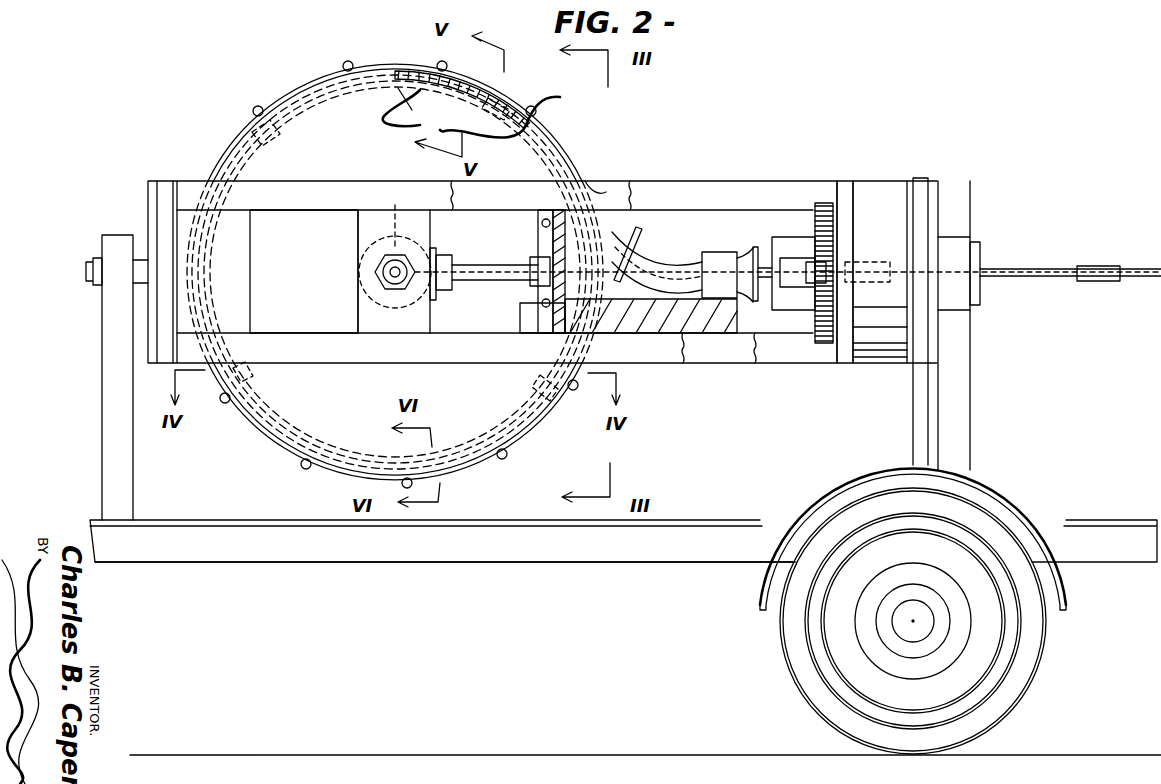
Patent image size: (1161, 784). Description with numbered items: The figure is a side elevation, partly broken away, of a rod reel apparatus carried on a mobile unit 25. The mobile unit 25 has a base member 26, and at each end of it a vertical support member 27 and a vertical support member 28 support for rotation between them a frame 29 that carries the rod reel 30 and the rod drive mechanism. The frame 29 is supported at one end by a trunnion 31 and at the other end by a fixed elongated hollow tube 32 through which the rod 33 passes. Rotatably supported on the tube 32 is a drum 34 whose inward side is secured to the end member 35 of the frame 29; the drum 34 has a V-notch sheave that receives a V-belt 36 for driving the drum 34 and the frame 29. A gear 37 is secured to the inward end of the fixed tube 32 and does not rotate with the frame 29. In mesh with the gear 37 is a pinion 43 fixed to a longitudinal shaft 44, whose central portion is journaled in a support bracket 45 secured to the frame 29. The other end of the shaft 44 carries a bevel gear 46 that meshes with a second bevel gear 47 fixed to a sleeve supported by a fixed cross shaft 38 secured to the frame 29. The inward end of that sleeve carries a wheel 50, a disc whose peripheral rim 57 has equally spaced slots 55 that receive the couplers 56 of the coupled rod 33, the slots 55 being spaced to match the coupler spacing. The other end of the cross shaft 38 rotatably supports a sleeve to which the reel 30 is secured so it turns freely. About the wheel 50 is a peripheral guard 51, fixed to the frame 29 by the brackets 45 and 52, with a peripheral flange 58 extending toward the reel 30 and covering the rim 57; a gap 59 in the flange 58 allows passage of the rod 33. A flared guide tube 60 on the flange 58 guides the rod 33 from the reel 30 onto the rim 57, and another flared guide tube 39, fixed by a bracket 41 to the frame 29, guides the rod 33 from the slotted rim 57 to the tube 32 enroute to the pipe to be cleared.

The mobile unit 25 is at (417, 583).
The base member 26 is at (226, 548).
The vertical support member 27 is at (118, 476).
The vertical support member 28 is at (958, 373).
The frame 29 is at (694, 184).
The rod reel 30 is at (293, 85).
The trunnion 31 is at (86, 270).
The tube 32 is at (977, 246).
The rod 33 is at (1030, 278).
The drum 34 is at (880, 185).
The end member 35 is at (843, 185).
The V-belt 36 is at (915, 396).
The gear 37 is at (814, 214).
The cross shaft 38 is at (394, 258).
The flared guide tube 39 is at (690, 262).
The bracket 41 is at (680, 312).
The pinion 43 is at (818, 300).
The longitudinal shaft 44 is at (497, 278).
The support bracket 45 is at (552, 240).
The bevel gear 46 is at (441, 256).
The second bevel gear 47 is at (356, 272).
The wheel 50 is at (433, 109).
The peripheral guard 51 is at (379, 100).
The bracket 52 is at (246, 238).
The slots 55 is at (265, 143).
The couplers 56 is at (248, 131).
The peripheral rim 57 is at (519, 111).
The peripheral flange 58 is at (421, 75).
The gap 59 is at (600, 190).
The flared guide tube 60 is at (558, 403).